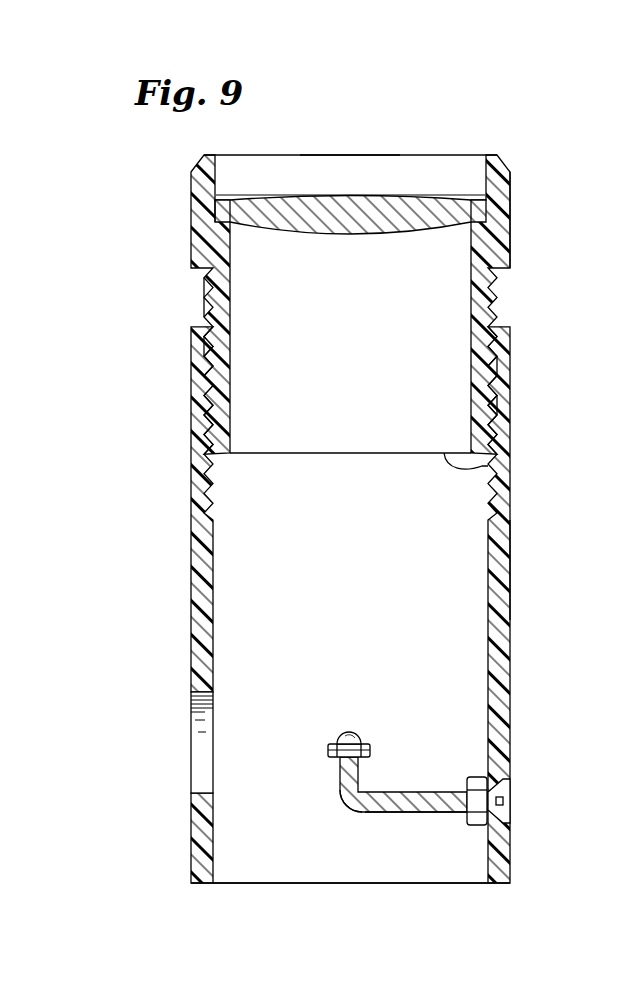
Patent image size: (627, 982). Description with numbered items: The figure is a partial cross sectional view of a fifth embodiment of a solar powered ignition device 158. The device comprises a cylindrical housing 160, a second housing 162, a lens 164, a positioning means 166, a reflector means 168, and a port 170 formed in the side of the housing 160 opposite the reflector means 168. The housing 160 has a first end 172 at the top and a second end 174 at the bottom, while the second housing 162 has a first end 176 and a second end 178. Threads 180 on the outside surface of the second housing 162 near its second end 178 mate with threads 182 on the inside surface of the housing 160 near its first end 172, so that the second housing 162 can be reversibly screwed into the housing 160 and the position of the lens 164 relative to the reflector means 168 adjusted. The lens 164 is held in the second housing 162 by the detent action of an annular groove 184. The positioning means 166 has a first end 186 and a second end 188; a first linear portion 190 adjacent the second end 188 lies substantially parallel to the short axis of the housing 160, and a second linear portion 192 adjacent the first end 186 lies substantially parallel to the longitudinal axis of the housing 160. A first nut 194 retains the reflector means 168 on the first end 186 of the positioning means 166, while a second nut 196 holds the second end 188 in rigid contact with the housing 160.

The solar powered ignition device 158 is at (520, 570).
The cylindrical housing 160 is at (512, 665).
The second housing 162 is at (510, 217).
The lens 164 is at (420, 212).
The positioning means 166 is at (403, 790).
The reflector means 168 is at (348, 725).
The port 170 is at (200, 760).
The first end 172 is at (505, 325).
The second end 174 is at (448, 884).
The first end 176 is at (362, 155).
The second end 178 is at (495, 470).
The threads 180 is at (208, 297).
The threads 182 is at (210, 345).
The annular groove 184 is at (215, 211).
The first end 186 is at (335, 758).
The second end 188 is at (497, 815).
The first linear portion 190 is at (405, 814).
The second linear portion 192 is at (342, 788).
The first nut 194 is at (333, 750).
The second nut 196 is at (490, 767).